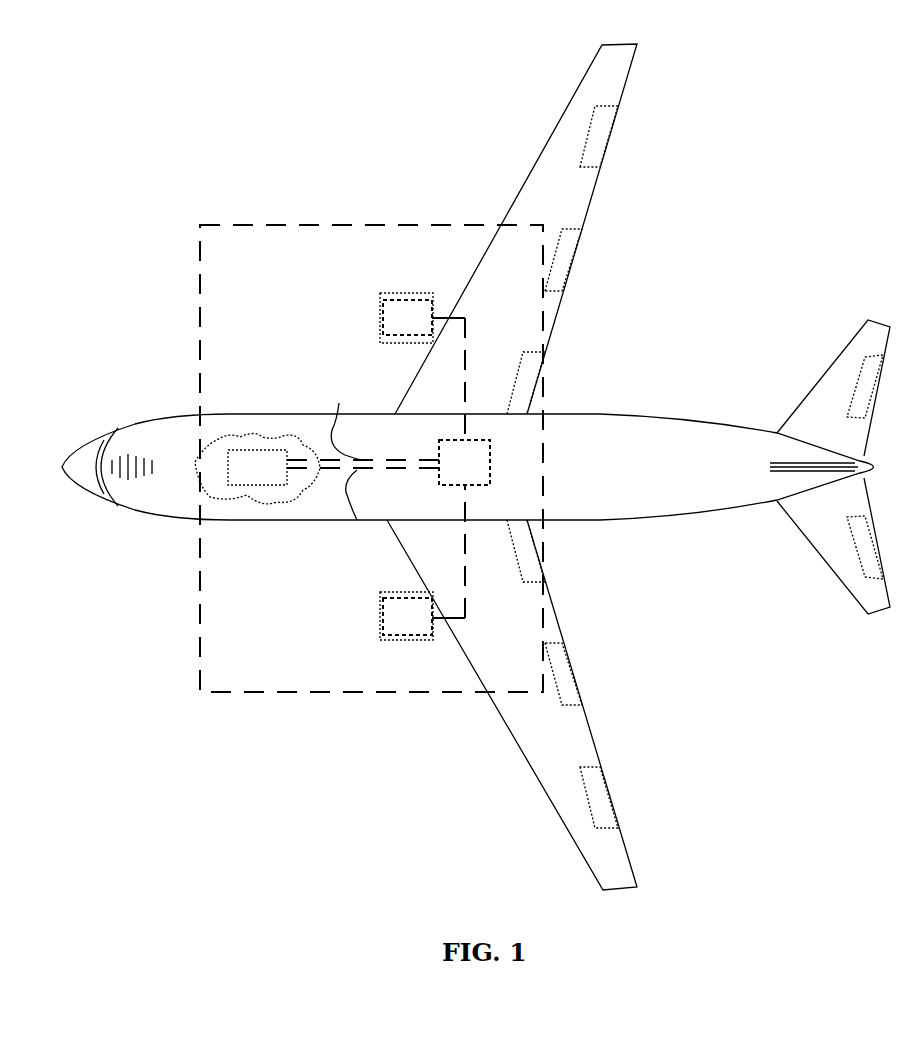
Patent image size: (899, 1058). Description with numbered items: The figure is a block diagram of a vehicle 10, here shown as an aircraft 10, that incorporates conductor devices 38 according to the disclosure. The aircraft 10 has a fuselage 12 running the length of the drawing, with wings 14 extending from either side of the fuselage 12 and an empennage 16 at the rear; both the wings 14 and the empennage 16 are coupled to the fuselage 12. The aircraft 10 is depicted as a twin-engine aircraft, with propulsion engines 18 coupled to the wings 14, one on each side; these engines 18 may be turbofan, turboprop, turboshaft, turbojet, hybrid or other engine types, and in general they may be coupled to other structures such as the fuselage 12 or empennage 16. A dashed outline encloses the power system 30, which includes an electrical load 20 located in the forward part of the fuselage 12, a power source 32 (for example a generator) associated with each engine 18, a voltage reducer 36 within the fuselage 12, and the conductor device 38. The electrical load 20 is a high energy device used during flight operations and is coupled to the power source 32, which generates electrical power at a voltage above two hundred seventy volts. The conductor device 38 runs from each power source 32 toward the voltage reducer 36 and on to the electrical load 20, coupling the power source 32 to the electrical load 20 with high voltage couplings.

The aircraft 10 is at (166, 140).
The fuselage 12 is at (613, 474).
The wings 14 is at (503, 333).
The empennage 16 is at (749, 547).
The propulsion engines 18 is at (398, 296).
The electrical load 20 is at (268, 478).
The power system 30 is at (199, 240).
The power source 32 is at (382, 329).
The voltage reducer 36 is at (474, 474).
The conductor device 38 is at (464, 399).